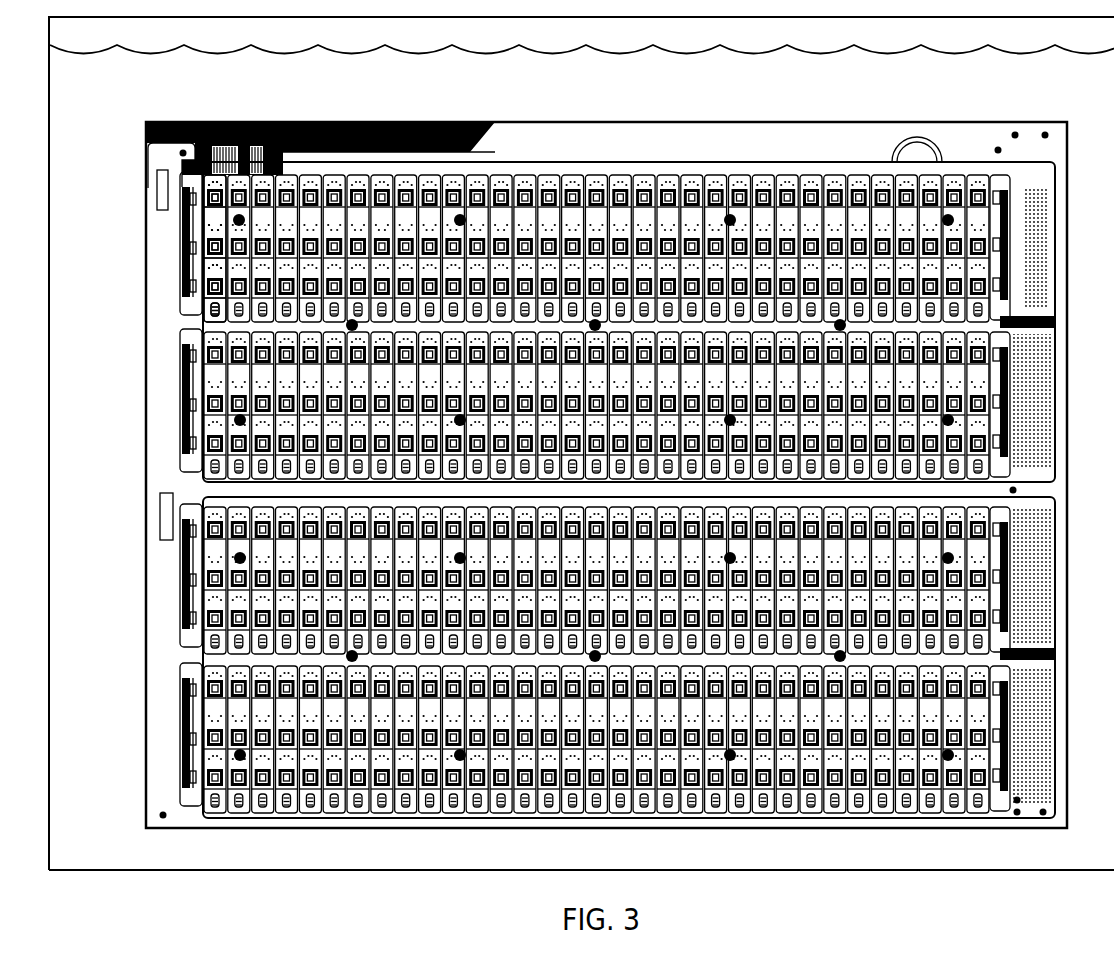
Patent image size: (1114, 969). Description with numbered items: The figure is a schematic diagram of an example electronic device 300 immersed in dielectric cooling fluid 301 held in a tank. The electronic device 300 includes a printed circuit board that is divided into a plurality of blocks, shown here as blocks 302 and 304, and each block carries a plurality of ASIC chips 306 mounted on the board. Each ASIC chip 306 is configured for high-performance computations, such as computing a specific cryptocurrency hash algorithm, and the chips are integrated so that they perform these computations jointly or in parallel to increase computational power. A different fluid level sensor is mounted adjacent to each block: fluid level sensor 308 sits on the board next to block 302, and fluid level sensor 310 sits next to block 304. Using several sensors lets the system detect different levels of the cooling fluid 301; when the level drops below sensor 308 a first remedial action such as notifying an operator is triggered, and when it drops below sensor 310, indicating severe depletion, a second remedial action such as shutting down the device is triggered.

The electronic device 300 is at (191, 109).
The dielectric cooling fluid 301 is at (1103, 107).
The block 302 is at (566, 322).
The block 304 is at (181, 578).
The ASIC chip 306 is at (203, 240).
The fluid level sensor 308 is at (162, 190).
The fluid level sensor 310 is at (163, 505).